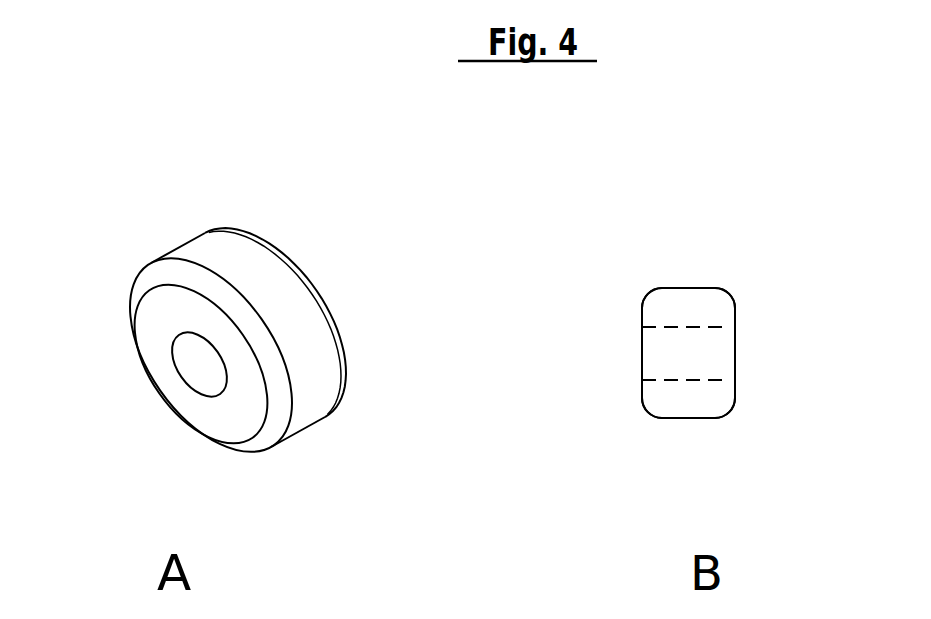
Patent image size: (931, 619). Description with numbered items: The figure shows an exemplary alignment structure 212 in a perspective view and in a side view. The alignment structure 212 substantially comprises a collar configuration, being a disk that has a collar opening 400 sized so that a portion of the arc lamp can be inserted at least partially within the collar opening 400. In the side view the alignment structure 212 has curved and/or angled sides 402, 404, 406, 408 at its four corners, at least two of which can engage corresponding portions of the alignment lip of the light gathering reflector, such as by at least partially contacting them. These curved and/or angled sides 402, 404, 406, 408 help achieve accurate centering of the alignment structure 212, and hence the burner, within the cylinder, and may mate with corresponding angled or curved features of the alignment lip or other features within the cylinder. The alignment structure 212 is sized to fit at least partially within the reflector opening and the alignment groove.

In FIG. 4A, the alignment structure 212 is at (166, 228).
In FIG. 4B, the alignment structure 212 is at (726, 272).
In FIG. 4A, the collar opening 400 is at (175, 376).
In FIG. 4B, the collar opening 400 is at (753, 358).
In FIG. 4B, the curved and/or angled side 402 is at (640, 281).
In FIG. 4B, the curved and/or angled side 404 is at (747, 297).
In FIG. 4B, the curved and/or angled side 406 is at (734, 423).
In FIG. 4B, the curved and/or angled side 408 is at (640, 422).